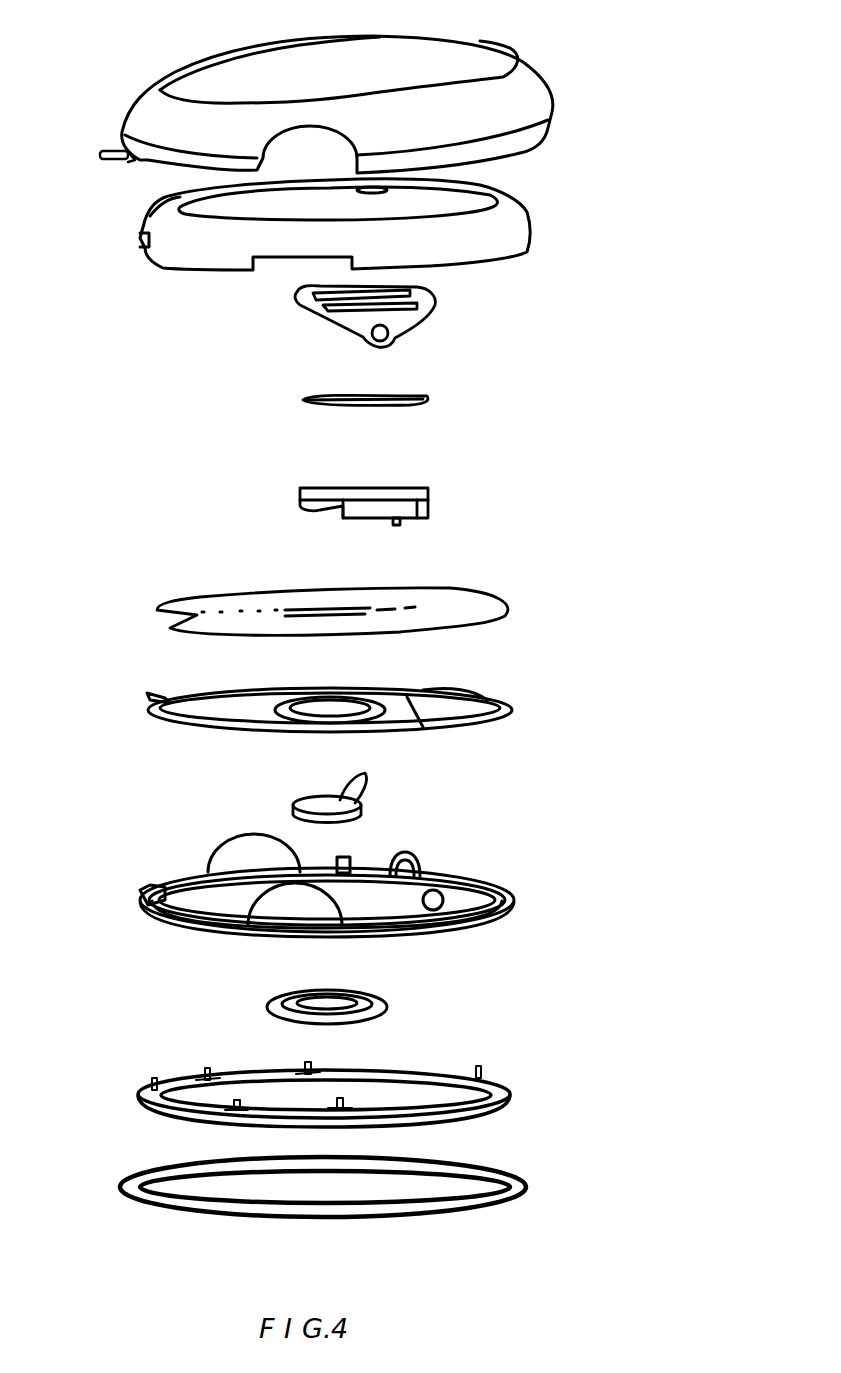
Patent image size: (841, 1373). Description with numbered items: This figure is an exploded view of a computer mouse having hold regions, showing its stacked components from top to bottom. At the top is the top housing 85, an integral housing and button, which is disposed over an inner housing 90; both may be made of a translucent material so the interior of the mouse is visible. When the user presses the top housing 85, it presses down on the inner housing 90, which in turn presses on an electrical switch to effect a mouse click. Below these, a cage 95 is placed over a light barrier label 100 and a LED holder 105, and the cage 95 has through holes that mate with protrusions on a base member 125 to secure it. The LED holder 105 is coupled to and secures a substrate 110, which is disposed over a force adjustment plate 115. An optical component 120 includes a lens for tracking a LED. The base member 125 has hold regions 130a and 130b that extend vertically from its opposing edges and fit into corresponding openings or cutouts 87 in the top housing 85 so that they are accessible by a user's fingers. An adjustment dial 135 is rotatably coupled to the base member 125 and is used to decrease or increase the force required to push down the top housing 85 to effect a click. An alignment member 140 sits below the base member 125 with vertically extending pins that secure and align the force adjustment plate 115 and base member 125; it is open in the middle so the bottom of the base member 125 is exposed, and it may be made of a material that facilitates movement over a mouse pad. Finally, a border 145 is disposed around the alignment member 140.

The top housing 85 is at (448, 62).
The openings or cutouts 87 is at (273, 170).
The inner housing 90 is at (520, 222).
The cage 95 is at (437, 313).
The light barrier label 100 is at (435, 397).
The LED holder 105 is at (430, 500).
The substrate 110 is at (507, 595).
The force adjustment plate 115 is at (510, 693).
The optical component 120 is at (368, 803).
The base member 125 is at (520, 883).
The hold region 130a is at (277, 923).
The hold region 130b is at (243, 850).
The adjustment dial 135 is at (390, 1005).
The alignment member 140 is at (513, 1083).
The border 145 is at (532, 1177).